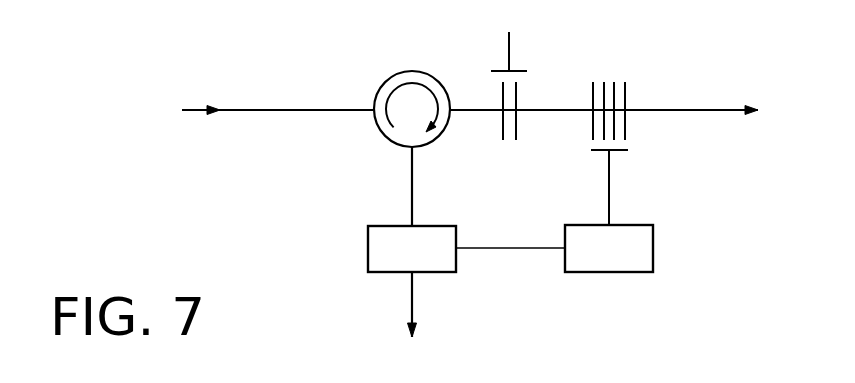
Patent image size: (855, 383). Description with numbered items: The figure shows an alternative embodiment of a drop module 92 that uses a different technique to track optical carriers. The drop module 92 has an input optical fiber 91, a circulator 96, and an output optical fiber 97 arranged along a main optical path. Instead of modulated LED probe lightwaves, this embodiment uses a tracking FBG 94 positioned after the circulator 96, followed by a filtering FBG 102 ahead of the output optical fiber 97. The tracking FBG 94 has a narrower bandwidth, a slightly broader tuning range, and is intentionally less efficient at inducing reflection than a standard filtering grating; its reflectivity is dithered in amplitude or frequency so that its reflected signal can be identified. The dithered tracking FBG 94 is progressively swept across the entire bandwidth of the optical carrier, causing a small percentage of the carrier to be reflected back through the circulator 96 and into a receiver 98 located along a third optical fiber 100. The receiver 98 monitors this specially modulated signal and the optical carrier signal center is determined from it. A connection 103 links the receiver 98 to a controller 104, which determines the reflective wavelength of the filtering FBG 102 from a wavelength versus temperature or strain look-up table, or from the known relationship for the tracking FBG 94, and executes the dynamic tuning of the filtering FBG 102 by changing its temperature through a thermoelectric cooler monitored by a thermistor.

The drop module 92 is at (688, 42).
The input optical fiber 91 is at (318, 108).
The circulator 96 is at (422, 73).
The tracking FBG 94 is at (511, 142).
The filtering FBG 102 is at (610, 80).
The output optical fiber 97 is at (692, 113).
The third optical fiber 100 is at (411, 181).
The receiver 98 is at (428, 264).
The control line 103 is at (509, 251).
The controller 104 is at (633, 264).